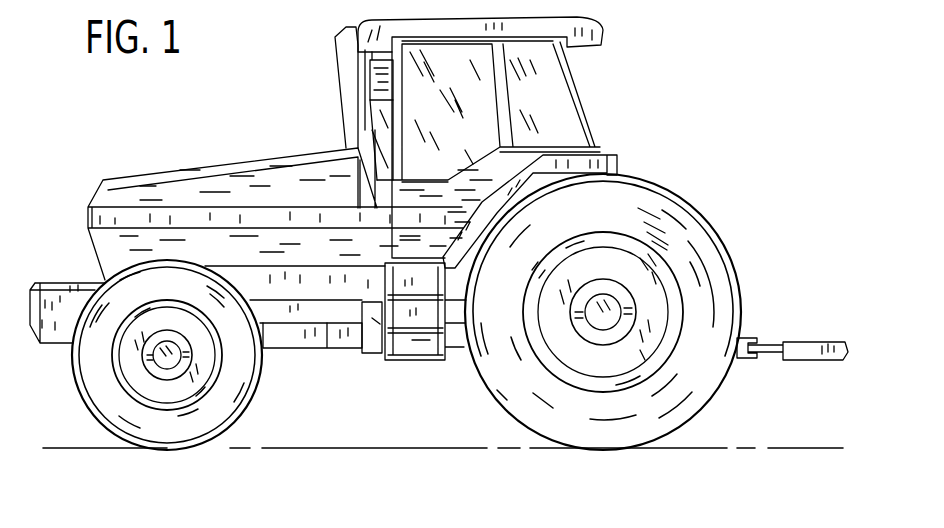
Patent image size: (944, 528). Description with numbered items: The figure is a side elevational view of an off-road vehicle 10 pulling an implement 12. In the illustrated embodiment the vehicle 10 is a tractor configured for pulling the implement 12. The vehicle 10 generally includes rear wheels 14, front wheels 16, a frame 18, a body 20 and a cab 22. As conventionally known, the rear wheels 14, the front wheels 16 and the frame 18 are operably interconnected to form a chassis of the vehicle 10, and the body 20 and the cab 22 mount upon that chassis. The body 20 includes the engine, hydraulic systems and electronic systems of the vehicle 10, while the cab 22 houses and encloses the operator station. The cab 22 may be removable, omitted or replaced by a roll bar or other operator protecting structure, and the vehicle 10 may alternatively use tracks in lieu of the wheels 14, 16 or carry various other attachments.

The off-road vehicle 10 is at (279, 125).
The implement 12 is at (815, 342).
The rear wheels 14 is at (688, 203).
The front wheels 16 is at (86, 400).
The frame 18 is at (291, 348).
The body 20 is at (124, 179).
The cab 22 is at (580, 17).